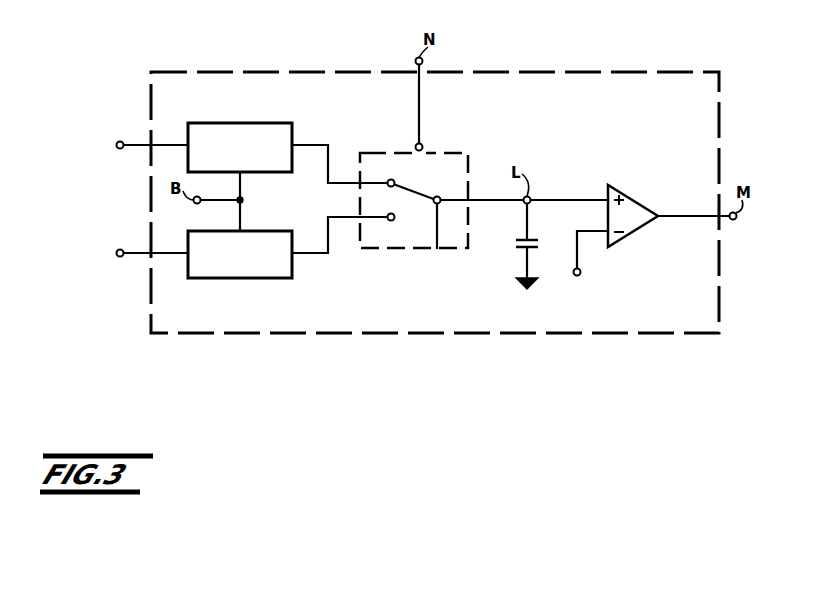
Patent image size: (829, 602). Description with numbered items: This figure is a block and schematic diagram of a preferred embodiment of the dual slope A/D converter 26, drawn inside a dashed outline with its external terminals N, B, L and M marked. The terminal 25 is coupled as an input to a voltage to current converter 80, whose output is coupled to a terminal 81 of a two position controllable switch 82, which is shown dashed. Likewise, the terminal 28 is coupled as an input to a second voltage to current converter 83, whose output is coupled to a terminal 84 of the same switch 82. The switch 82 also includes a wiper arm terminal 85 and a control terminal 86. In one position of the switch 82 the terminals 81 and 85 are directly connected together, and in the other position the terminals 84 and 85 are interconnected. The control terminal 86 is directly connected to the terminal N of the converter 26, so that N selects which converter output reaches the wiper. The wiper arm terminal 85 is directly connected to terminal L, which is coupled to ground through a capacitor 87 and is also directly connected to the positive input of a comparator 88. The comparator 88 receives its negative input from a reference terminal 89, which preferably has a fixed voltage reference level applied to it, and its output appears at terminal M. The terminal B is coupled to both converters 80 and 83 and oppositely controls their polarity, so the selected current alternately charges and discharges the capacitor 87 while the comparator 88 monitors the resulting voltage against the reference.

The terminal 25 is at (122, 141).
The terminal 28 is at (122, 249).
The dual slope A/D converter 26 is at (528, 71).
The voltage to current converter 80 is at (268, 124).
The voltage to current converter 83 is at (281, 272).
The terminal 81 is at (389, 179).
The two position controllable switch 82 is at (470, 170).
The terminal 84 is at (390, 221).
The wiper arm terminal 85 is at (438, 242).
The control terminal 86 is at (422, 146).
The capacitor 87 is at (521, 242).
The comparator 88 is at (645, 208).
The reference terminal 89 is at (581, 273).